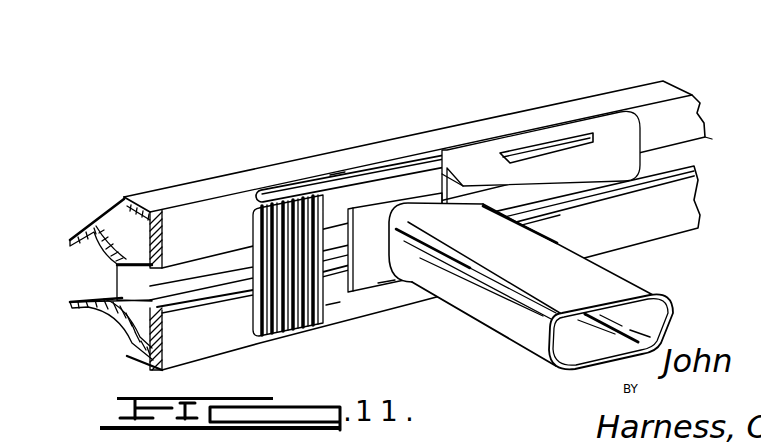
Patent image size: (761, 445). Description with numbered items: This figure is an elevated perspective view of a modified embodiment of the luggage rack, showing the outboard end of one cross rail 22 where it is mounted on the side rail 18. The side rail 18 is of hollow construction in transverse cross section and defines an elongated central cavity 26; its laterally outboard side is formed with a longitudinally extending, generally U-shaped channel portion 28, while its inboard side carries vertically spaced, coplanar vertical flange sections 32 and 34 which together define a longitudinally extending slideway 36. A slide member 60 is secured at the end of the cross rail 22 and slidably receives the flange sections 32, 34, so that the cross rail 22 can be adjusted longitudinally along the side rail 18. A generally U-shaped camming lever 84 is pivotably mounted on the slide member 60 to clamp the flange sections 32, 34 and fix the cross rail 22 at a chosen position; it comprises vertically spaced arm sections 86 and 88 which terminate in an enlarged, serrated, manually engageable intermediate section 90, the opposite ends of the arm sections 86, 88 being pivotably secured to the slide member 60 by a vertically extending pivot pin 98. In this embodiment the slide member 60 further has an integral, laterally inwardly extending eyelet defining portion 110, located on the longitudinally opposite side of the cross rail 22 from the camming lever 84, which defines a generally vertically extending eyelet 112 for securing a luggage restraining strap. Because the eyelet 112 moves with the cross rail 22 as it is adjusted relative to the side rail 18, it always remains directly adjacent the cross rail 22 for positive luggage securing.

The side rail 18 is at (628, 86).
The cross rail 22 is at (633, 279).
The central cavity 26 is at (135, 308).
The U-shaped channel portion 28 is at (72, 258).
The vertical flange section 32 is at (180, 222).
The vertical flange section 34 is at (232, 332).
The slideway 36 is at (697, 149).
The slide member 60 is at (383, 277).
The camming lever 84 is at (289, 187).
The arm section 86 is at (377, 190).
The arm section 88 is at (381, 297).
The intermediate section 90 is at (336, 303).
The pivot pin 98 is at (440, 158).
The eyelet defining portion 110 is at (497, 190).
The eyelet 112 is at (566, 142).